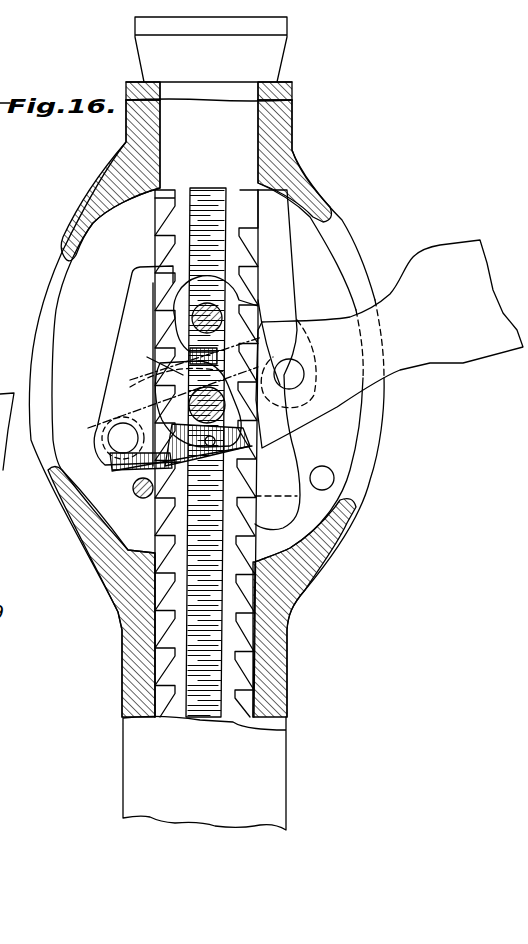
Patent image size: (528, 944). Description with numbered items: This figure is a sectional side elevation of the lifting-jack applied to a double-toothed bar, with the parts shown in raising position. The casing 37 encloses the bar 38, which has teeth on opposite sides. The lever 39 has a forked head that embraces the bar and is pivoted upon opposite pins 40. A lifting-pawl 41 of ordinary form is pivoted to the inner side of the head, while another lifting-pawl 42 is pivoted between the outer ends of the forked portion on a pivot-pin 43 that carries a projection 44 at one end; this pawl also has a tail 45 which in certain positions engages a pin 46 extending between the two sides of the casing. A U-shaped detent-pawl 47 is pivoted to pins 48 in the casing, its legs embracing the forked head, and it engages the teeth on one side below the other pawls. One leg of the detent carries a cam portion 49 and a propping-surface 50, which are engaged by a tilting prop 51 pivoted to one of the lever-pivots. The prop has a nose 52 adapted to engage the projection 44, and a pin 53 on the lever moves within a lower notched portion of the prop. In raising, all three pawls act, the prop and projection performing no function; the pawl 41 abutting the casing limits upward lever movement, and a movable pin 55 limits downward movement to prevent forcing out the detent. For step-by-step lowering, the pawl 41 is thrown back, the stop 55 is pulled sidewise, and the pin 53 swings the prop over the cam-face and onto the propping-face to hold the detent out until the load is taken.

The casing 37 is at (276, 408).
The bar 38 is at (206, 452).
The lever 39 is at (389, 344).
The pins 40 is at (202, 413).
The lifting-pawl 41 is at (277, 278).
The lifting-pawl 42 is at (132, 317).
The pivot-pin 43 is at (113, 437).
The projection 44 is at (137, 467).
The tail 45 is at (137, 491).
The pin 46 is at (165, 506).
The detent-pawl 47 is at (256, 452).
The pins 48 is at (206, 303).
The cam portion 49 is at (252, 366).
The propping-surface 50 is at (243, 372).
The tilting prop 51 is at (153, 358).
The nose 52 is at (137, 383).
The pin 53 is at (210, 466).
The movable pin 55 is at (334, 480).